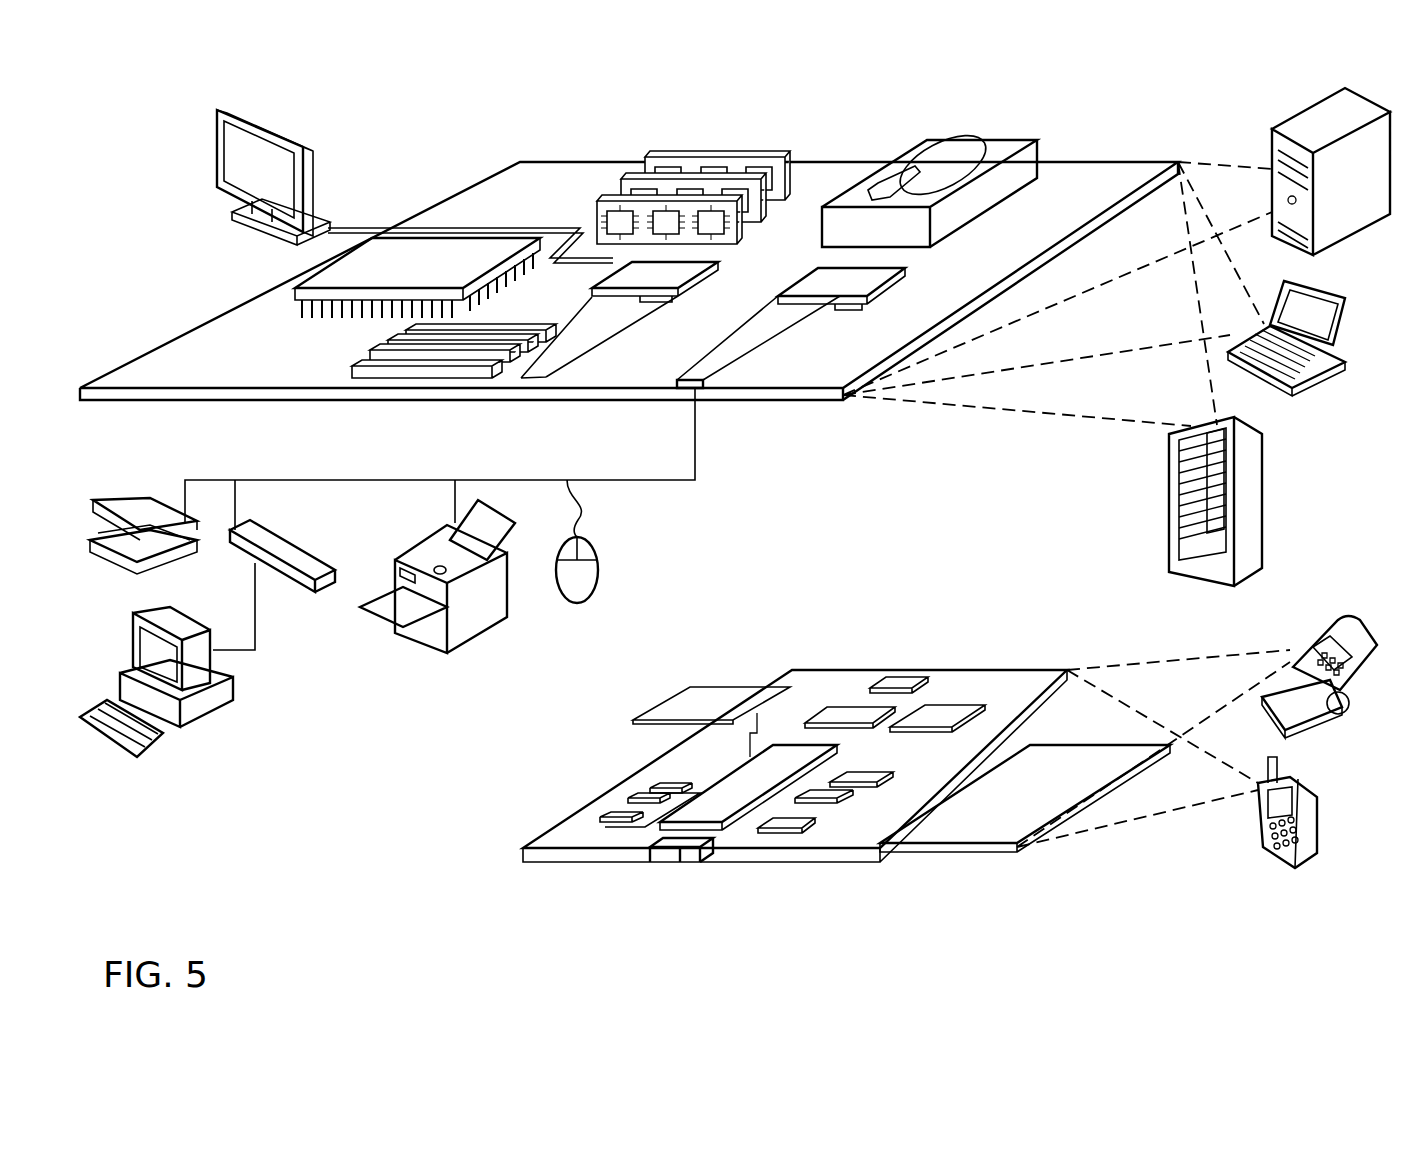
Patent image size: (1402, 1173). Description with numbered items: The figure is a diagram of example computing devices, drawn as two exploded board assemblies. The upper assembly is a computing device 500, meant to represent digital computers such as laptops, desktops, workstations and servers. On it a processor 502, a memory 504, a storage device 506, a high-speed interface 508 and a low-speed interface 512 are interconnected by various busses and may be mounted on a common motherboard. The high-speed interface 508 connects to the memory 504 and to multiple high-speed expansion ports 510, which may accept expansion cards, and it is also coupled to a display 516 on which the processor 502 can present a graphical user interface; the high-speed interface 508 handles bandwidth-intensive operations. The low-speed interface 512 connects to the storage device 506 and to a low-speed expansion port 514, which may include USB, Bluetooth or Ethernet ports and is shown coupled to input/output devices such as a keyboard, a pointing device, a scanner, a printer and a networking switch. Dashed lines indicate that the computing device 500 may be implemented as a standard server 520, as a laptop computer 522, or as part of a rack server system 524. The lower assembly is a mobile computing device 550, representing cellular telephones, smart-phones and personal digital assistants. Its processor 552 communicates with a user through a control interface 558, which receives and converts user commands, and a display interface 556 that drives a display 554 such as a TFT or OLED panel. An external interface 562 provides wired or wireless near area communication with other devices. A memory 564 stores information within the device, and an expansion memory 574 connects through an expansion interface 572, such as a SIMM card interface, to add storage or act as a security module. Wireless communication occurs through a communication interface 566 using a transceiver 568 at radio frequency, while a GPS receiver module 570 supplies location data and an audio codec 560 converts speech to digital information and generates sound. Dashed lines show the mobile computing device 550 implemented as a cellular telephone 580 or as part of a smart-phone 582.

The computing device 500 is at (440, 130).
The processor 502 is at (305, 295).
The memory 504 is at (662, 157).
The storage device 506 is at (927, 140).
The high-speed interface 508 is at (628, 278).
The high-speed expansion ports 510 is at (370, 358).
The low-speed interface 512 is at (820, 281).
The low-speed expansion port 514 is at (705, 388).
The display 516 is at (224, 104).
The standard server 520 is at (1271, 144).
The laptop computer 522 is at (1294, 394).
The rack server system 524 is at (1170, 530).
The mobile computing device 550 is at (497, 857).
The processor 552 is at (718, 819).
The display 554 is at (982, 835).
The display interface 556 is at (794, 822).
The control interface 558 is at (832, 800).
The audio codec 560 is at (861, 776).
The external interface 562 is at (680, 862).
The memory 564 is at (618, 803).
The communication interface 566 is at (853, 712).
The transceiver 568 is at (937, 712).
The GPS receiver module 570 is at (912, 672).
The expansion interface 572 is at (774, 682).
The expansion memory 574 is at (686, 687).
The cellular telephone 580 is at (1323, 624).
The smart-phone 582 is at (1262, 817).